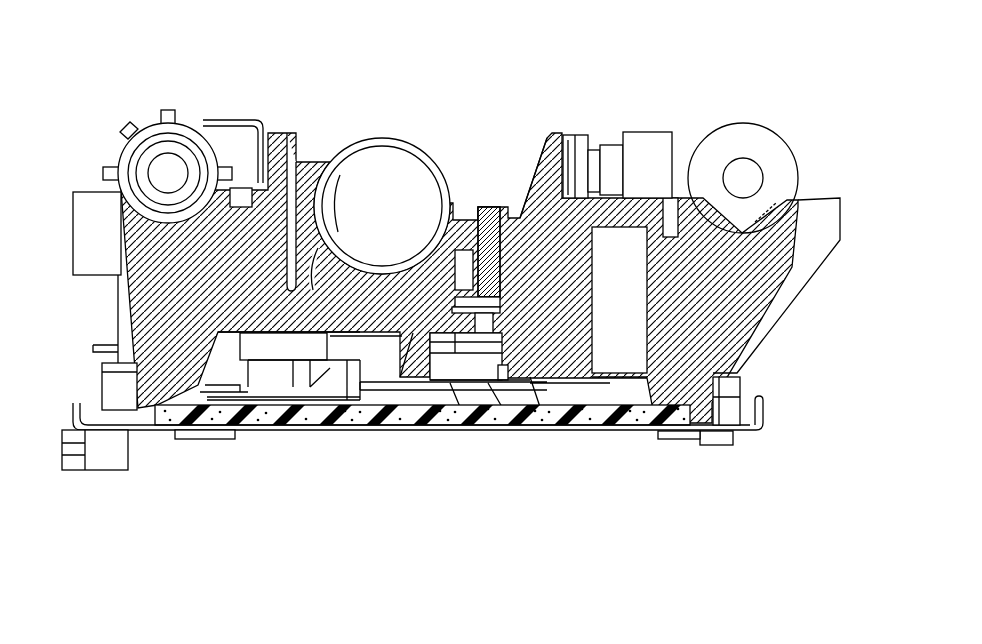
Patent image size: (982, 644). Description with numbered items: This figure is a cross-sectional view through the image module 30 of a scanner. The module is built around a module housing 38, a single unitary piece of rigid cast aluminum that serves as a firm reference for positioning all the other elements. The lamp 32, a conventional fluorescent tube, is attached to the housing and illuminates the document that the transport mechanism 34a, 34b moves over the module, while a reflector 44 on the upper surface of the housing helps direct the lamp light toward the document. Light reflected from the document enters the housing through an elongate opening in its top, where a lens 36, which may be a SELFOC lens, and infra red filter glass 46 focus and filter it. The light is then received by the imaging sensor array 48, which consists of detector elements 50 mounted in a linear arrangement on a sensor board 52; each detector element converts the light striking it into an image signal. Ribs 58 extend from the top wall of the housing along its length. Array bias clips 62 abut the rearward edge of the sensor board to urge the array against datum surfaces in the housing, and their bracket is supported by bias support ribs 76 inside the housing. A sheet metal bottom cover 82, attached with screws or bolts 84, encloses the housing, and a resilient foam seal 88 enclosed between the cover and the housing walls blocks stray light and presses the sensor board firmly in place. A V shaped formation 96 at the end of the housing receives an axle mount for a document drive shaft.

The image module 30 is at (762, 60).
The lamp 32 is at (404, 139).
The transport mechanism 34a is at (148, 120).
The transport mechanism 34b is at (784, 141).
The lens 36 is at (490, 205).
The module housing 38 is at (138, 320).
The reflector 44 is at (534, 162).
The infra red filter glass 46 is at (490, 347).
The imaging sensor array 48 is at (517, 489).
The detector elements 50 is at (488, 382).
The sensor board 52 is at (448, 387).
The ribs 58 is at (416, 358).
The array bias clips 62 is at (273, 355).
The bias support ribs 76 is at (315, 287).
The bottom cover 82 is at (757, 438).
The screws or bolts 84 is at (705, 449).
The resilient seal 88 is at (597, 423).
The V shaped formation 96 is at (756, 214).